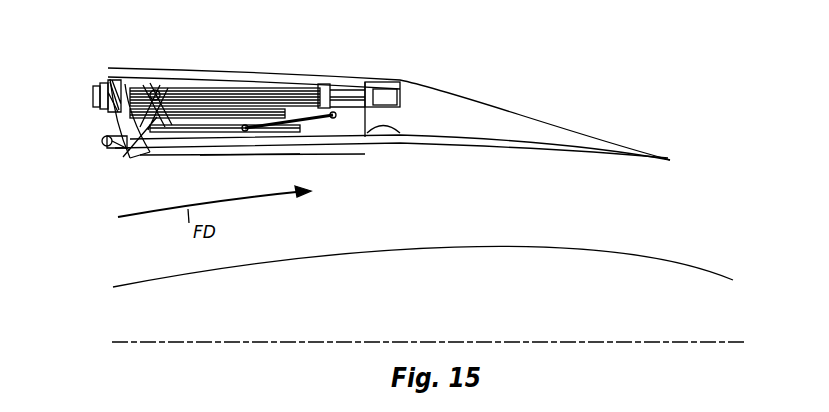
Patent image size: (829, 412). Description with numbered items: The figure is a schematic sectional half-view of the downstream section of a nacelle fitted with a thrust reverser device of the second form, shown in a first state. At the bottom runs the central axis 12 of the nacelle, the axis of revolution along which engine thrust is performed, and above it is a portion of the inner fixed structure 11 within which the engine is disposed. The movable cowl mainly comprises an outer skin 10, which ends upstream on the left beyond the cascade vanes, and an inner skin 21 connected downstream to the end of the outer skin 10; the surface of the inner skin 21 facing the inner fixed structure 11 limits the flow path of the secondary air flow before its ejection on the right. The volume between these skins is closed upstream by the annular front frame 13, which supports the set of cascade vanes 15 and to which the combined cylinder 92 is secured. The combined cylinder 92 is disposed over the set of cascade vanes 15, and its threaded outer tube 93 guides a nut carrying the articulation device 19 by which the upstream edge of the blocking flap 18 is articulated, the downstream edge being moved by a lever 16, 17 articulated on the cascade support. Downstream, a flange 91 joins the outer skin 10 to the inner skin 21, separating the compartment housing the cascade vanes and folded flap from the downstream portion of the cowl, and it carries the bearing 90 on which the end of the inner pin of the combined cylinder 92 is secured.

The outer skin 10 is at (603, 128).
The inner fixed structure 11 is at (677, 263).
The central axis 12 is at (633, 341).
The front frame 13 is at (118, 130).
The set of cascade vanes 15 is at (323, 84).
The lever 16 is at (287, 130).
The lever 17 is at (346, 112).
The blocking flap 18 is at (179, 155).
The articulation device 19 is at (153, 92).
The inner skin 21 is at (208, 155).
The bearing 90 is at (400, 93).
The flange 91 is at (405, 144).
The combined cylinder 92 is at (92, 93).
The threaded outer tube 93 is at (229, 90).